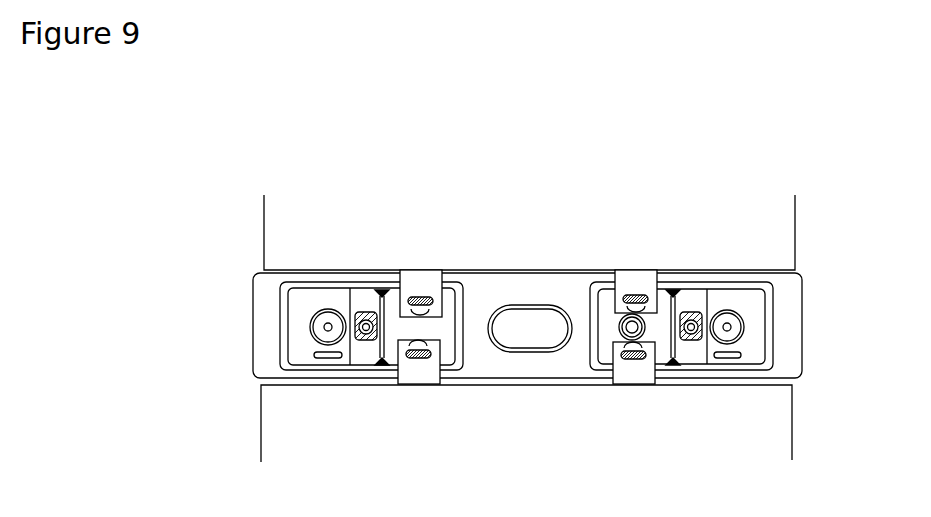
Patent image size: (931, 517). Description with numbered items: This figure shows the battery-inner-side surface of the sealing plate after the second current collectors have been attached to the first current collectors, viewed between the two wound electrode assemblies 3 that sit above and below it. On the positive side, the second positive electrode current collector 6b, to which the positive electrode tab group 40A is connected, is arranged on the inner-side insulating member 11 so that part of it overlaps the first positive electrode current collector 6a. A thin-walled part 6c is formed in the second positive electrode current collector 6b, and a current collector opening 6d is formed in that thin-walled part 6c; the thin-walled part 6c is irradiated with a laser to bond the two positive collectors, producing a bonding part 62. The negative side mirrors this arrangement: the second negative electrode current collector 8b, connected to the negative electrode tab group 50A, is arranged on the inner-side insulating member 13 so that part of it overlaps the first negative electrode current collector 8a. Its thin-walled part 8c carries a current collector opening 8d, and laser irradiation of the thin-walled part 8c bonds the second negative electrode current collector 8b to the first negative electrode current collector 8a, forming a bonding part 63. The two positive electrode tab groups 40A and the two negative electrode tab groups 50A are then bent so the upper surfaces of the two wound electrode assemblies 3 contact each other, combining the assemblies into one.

The wound electrode assembly 3 is at (772, 224).
The inner-side insulating member 11 is at (773, 362).
The inner-side insulating member 13 is at (282, 361).
The first negative electrode current collector 8a is at (320, 305).
The second negative electrode current collector 8b is at (443, 325).
The thin-walled part 8c is at (357, 342).
The current collector opening 8d is at (367, 312).
The bonding part 63 is at (372, 352).
The negative electrode tab group 50A is at (420, 290).
The first positive electrode current collector 6a is at (743, 310).
The second positive electrode current collector 6b is at (608, 327).
The thin-walled part 6c is at (684, 343).
The current collector opening 6d is at (690, 312).
The bonding part 62 is at (690, 360).
The positive electrode tab group 40A is at (637, 292).